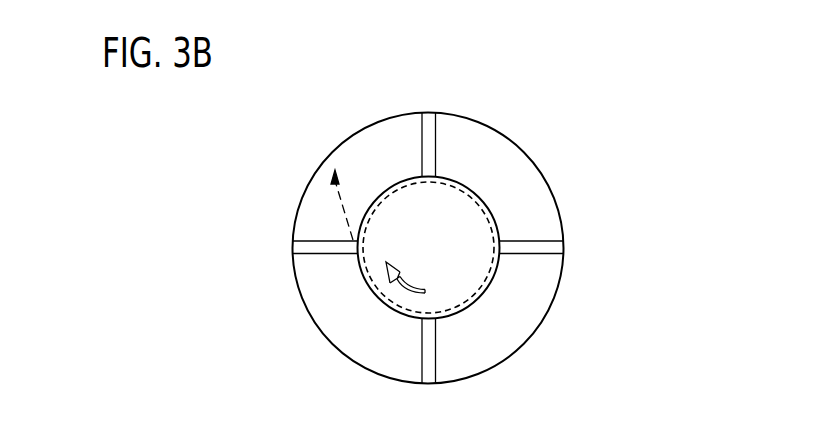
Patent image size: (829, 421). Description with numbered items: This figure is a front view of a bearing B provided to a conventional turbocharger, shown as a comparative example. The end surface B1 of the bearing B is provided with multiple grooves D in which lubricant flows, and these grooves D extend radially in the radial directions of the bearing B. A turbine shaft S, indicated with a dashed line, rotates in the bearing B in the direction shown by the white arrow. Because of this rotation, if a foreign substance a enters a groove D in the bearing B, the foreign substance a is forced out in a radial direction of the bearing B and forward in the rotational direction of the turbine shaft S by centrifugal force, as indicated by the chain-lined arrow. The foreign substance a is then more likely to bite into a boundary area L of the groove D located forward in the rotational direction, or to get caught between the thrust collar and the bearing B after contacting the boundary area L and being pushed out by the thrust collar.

The bearing B is at (482, 117).
The end surface B1 is at (522, 186).
The grooves D is at (557, 247).
The boundary area L is at (308, 240).
The foreign substance a is at (353, 242).
The turbine shaft S is at (368, 288).